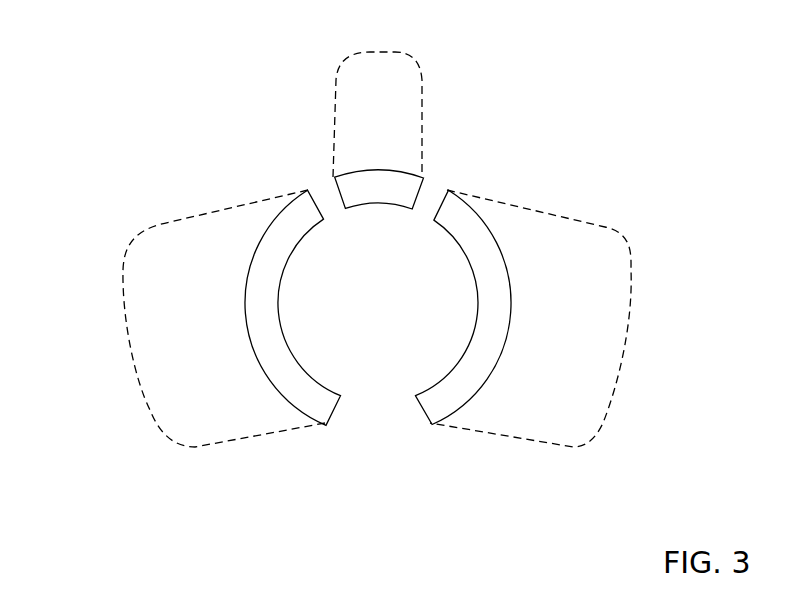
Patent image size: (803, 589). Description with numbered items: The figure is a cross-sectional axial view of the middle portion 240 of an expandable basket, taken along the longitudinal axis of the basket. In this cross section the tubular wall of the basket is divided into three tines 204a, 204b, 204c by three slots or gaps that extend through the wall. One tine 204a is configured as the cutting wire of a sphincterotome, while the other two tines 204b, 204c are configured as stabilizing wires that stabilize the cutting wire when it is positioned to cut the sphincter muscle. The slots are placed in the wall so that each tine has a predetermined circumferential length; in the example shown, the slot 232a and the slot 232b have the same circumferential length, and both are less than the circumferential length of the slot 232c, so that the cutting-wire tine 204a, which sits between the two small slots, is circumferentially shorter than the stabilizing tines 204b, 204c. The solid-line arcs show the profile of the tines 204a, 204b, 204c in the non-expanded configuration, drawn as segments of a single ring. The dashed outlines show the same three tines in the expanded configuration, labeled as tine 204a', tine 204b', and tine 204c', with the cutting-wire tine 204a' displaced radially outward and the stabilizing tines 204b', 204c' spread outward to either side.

The middle portion 240 is at (118, 93).
The tine 204a is at (429, 116).
The tine in expanded configuration 204a' is at (339, 100).
The tine 204b is at (188, 307).
The tine in expanded configuration 204b' is at (199, 292).
The tine 204c is at (524, 286).
The tine in expanded configuration 204c' is at (577, 318).
The slot 232a is at (325, 197).
The slot 232b is at (428, 195).
The slot 232c is at (375, 412).